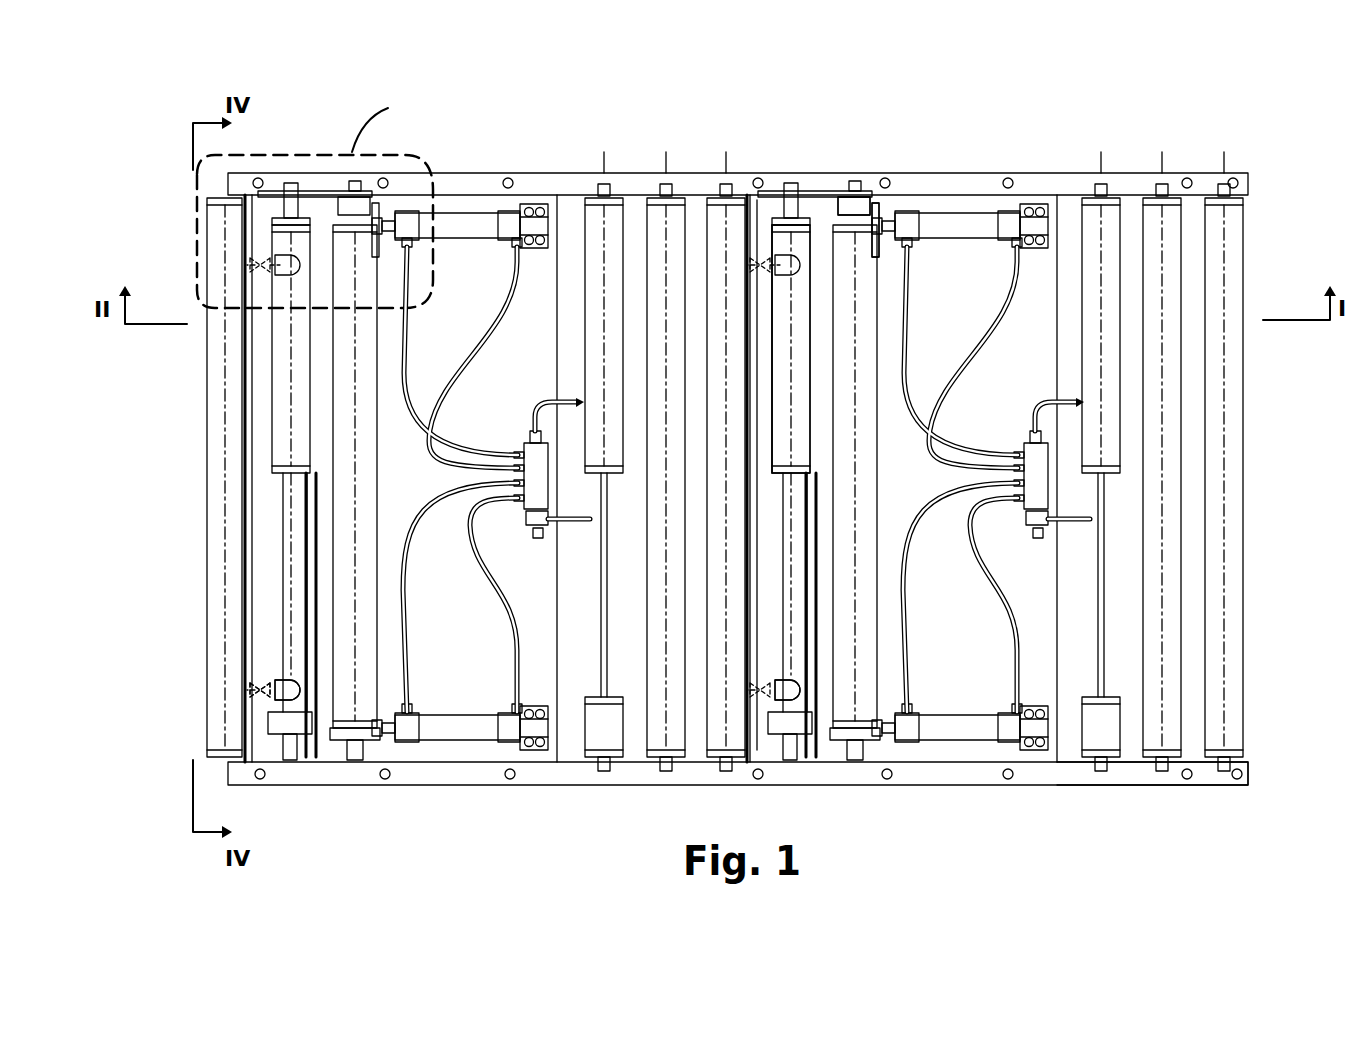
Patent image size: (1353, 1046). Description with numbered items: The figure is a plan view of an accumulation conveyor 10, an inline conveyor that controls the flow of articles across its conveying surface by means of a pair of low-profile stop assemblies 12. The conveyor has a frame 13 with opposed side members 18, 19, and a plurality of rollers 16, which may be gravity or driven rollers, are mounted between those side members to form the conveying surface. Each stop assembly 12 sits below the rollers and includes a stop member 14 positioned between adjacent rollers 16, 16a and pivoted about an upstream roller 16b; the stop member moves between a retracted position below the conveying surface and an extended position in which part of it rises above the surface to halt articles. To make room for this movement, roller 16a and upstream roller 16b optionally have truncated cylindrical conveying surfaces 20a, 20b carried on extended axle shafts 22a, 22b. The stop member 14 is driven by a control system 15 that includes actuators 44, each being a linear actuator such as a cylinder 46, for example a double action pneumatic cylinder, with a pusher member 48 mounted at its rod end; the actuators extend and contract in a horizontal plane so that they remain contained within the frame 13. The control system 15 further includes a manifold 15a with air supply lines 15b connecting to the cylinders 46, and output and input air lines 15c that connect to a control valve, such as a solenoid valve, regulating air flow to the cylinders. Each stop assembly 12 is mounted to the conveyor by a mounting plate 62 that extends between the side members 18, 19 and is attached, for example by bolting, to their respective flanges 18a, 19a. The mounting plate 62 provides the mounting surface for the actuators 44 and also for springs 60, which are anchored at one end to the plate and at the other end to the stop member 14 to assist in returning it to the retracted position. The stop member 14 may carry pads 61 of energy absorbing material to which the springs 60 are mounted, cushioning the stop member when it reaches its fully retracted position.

The accumulation conveyor 10 is at (1022, 99).
The stop assembly 12 is at (473, 214).
The frame 13 is at (570, 173).
The stop member 14 is at (316, 760).
The control system 15 is at (511, 537).
The manifold 15a is at (1050, 484).
The air supply lines 15b is at (990, 460).
The output and input air lines 15c is at (1078, 412).
The rollers 16 is at (683, 225).
The roller 16a is at (757, 195).
The upstream roller 16b is at (880, 305).
The side member 18 is at (1230, 173).
The flange 18a is at (1123, 178).
The side member 19 is at (1160, 784).
The flange 19a is at (1080, 773).
The truncated cylindrical conveying surface 20a is at (803, 250).
The truncated cylindrical conveying surface 20b is at (880, 497).
The extended axle shaft 22a is at (790, 255).
The extended axle shaft 22b is at (878, 300).
The actuator 44 is at (474, 243).
The cylinder 46 is at (966, 747).
The pusher member 48 is at (880, 750).
The springs 60 is at (262, 690).
The pads 61 is at (278, 702).
The mounting plate 62 is at (270, 500).